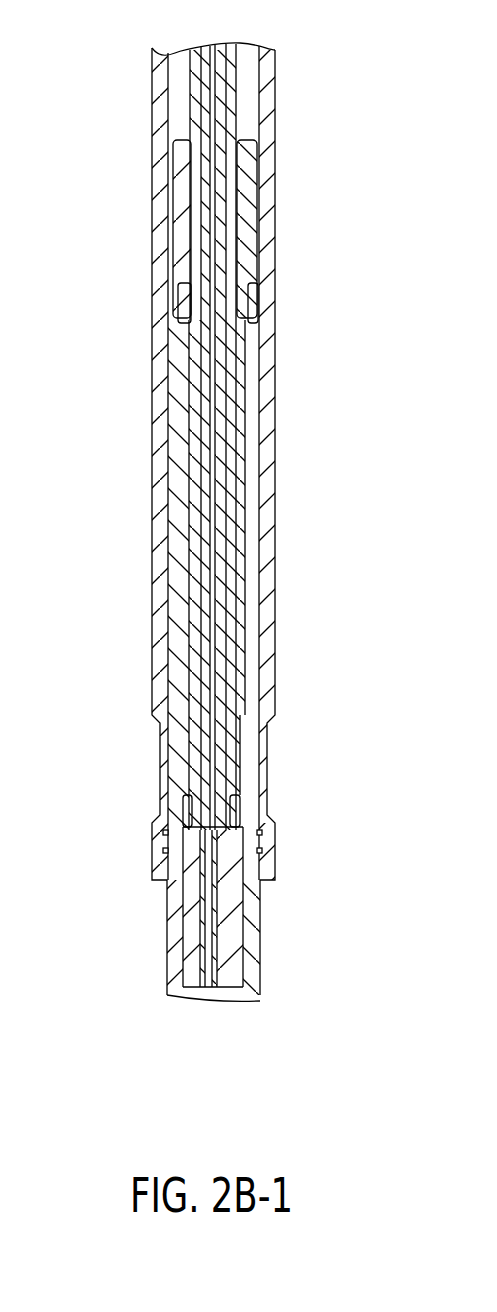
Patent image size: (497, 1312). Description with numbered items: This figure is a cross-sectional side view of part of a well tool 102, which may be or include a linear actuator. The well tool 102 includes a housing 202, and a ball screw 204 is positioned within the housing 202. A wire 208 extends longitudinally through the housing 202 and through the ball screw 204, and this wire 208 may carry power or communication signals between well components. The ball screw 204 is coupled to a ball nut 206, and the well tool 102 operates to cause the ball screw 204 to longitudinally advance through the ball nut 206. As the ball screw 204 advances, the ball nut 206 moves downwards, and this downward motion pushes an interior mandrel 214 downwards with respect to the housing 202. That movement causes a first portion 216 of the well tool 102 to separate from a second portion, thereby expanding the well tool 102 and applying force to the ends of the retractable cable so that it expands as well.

The well tool 102 is at (86, 62).
The housing 202 is at (281, 272).
The ball screw 204 is at (190, 94).
The ball nut 206 is at (262, 191).
The wire 208 is at (222, 484).
The interior mandrel 214 is at (270, 920).
The first portion 216 is at (281, 386).